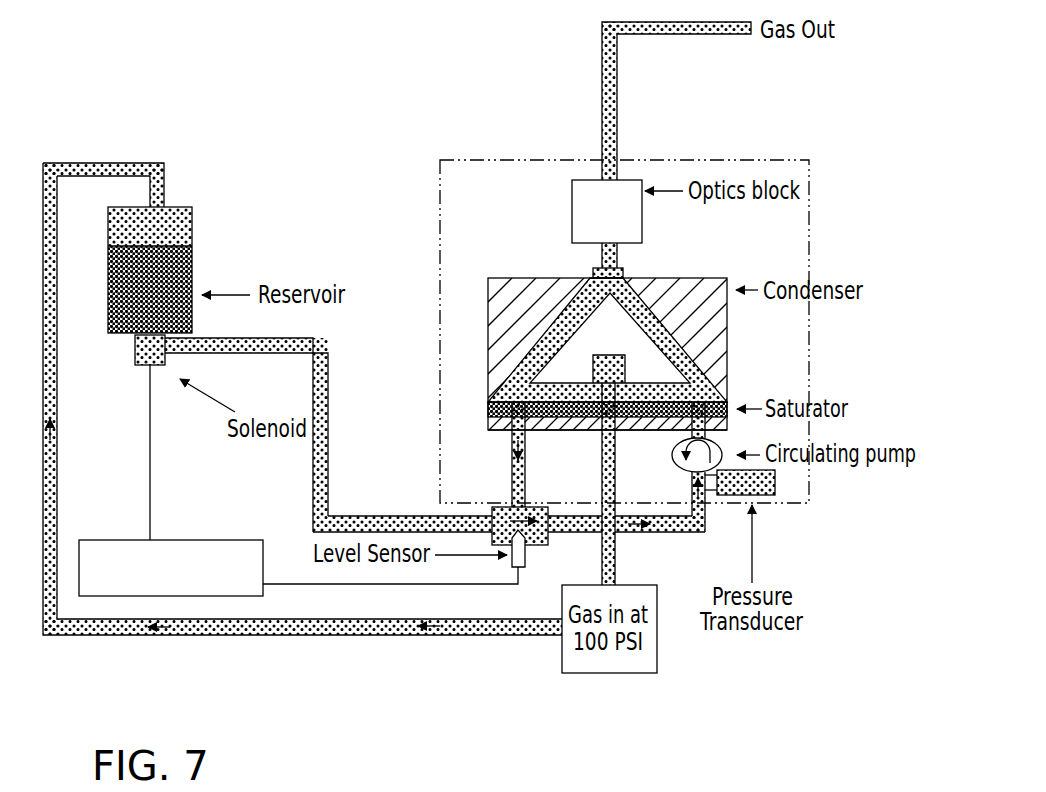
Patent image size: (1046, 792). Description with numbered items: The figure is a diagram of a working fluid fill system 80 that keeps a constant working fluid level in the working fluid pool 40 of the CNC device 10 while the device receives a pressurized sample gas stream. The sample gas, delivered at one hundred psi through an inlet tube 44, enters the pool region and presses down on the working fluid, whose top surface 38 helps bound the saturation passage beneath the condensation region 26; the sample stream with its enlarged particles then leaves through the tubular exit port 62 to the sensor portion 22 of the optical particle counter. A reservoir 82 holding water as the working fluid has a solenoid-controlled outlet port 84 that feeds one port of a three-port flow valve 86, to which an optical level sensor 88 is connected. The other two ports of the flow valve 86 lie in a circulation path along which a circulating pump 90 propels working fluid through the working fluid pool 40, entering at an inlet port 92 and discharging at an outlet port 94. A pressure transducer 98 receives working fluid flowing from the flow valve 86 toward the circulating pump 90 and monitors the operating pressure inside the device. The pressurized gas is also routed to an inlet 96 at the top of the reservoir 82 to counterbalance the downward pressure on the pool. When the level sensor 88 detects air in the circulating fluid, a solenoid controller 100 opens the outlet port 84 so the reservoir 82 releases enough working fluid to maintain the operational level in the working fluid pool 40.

The CNC device 10 is at (476, 303).
The sensor portion 22 is at (642, 222).
The condensation region 26 is at (683, 343).
The top surface 38 is at (703, 395).
The working fluid pool 40 is at (490, 407).
The inlet tube 44 is at (600, 437).
The tubular exit port 62 is at (623, 270).
The working fluid fill system 80 is at (286, 642).
The reservoir 82 is at (192, 275).
The solenoid-controlled outlet port 84 is at (135, 350).
The three-port flow valve 86 is at (492, 510).
The optical level sensor 88 is at (512, 563).
The circulating pump 90 is at (675, 445).
The inlet port 92 is at (703, 435).
The outlet port 94 is at (512, 437).
The inlet 96 is at (164, 190).
The pressure transducer 98 is at (775, 483).
The solenoid controller 100 is at (263, 575).